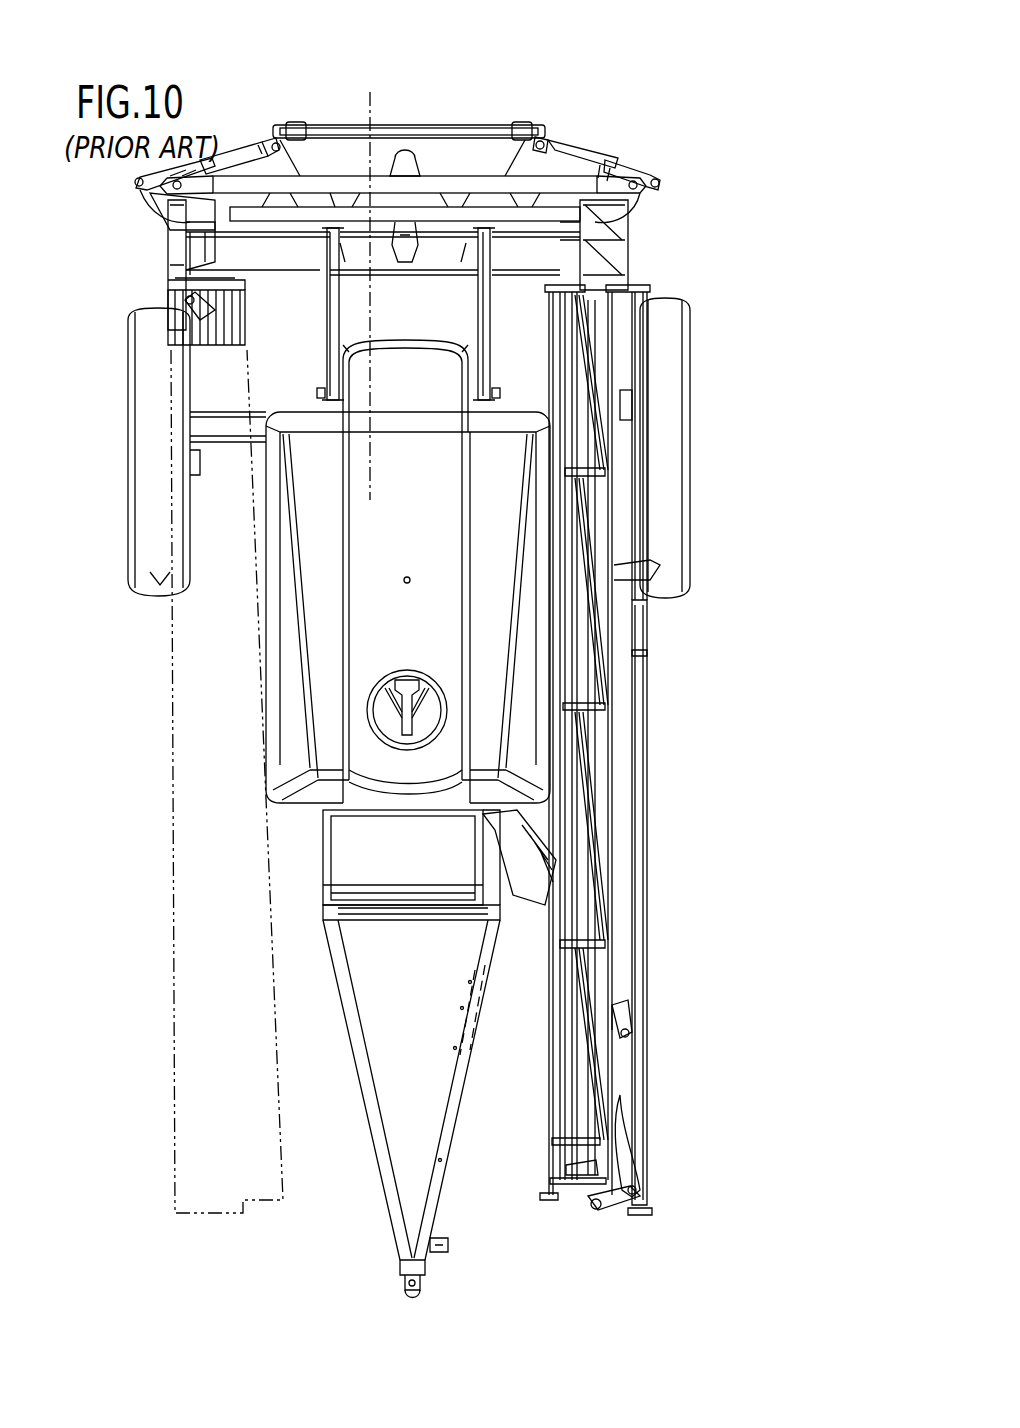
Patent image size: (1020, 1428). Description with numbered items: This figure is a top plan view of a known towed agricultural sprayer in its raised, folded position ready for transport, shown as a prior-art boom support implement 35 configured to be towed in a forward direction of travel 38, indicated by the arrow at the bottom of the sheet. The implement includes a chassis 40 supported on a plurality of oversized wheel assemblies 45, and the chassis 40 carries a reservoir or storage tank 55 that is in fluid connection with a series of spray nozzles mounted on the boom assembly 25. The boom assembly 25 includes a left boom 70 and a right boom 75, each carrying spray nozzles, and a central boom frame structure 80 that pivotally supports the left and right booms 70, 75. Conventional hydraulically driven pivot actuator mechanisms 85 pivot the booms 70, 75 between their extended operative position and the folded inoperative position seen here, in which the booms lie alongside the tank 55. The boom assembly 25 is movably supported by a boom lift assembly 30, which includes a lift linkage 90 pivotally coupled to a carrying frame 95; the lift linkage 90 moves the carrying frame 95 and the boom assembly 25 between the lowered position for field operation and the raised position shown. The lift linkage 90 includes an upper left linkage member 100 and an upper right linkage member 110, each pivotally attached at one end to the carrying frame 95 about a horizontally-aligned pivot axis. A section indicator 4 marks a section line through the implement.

The section line 4 is at (370, 85).
The boom assembly 25 is at (658, 688).
The boom lift assembly 30 is at (566, 254).
The boom support implement 35 is at (752, 983).
The forward direction of travel 38 is at (465, 1280).
The chassis 40 is at (322, 856).
The wheel assemblies 45 is at (695, 340).
The reservoir or storage tank 55 is at (284, 634).
The left boom 70 is at (612, 880).
The right boom 75 is at (175, 990).
The central boom frame structure 80 is at (447, 160).
The pivot actuator mechanism 85 is at (251, 125).
The lift linkage 90 is at (506, 314).
The carrying frame 95 is at (352, 235).
The upper left linkage member 100 is at (494, 372).
The upper right linkage member 110 is at (322, 368).